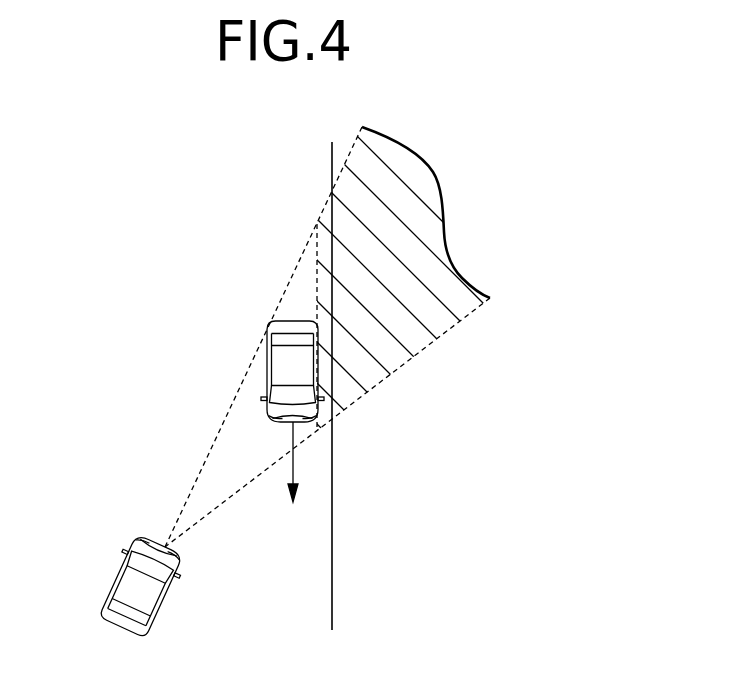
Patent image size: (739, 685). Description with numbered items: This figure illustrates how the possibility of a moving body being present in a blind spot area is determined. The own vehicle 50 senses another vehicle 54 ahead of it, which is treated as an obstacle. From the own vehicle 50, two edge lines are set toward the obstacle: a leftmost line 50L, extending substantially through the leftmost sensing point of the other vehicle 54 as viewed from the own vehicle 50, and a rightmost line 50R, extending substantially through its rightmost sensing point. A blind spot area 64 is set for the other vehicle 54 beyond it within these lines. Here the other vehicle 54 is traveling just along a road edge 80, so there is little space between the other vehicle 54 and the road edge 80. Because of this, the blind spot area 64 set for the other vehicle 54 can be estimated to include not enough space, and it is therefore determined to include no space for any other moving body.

The own vehicle 50 is at (122, 567).
The leftmost line 50L is at (192, 474).
The rightmost line 50R is at (228, 506).
The other vehicle 54 is at (270, 351).
The blind spot area 64 is at (412, 162).
The road edge 80 is at (333, 535).